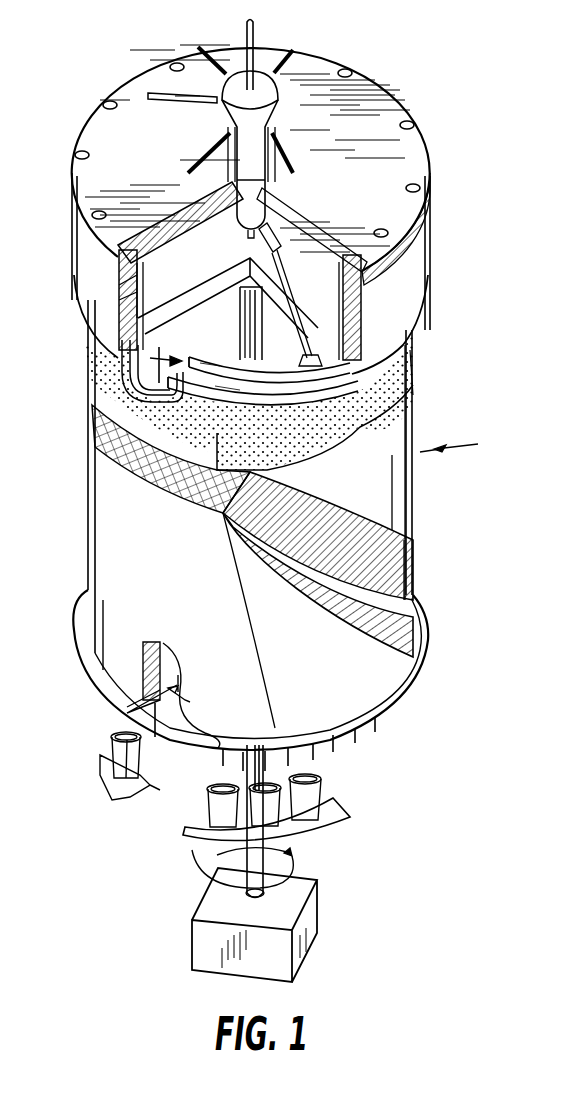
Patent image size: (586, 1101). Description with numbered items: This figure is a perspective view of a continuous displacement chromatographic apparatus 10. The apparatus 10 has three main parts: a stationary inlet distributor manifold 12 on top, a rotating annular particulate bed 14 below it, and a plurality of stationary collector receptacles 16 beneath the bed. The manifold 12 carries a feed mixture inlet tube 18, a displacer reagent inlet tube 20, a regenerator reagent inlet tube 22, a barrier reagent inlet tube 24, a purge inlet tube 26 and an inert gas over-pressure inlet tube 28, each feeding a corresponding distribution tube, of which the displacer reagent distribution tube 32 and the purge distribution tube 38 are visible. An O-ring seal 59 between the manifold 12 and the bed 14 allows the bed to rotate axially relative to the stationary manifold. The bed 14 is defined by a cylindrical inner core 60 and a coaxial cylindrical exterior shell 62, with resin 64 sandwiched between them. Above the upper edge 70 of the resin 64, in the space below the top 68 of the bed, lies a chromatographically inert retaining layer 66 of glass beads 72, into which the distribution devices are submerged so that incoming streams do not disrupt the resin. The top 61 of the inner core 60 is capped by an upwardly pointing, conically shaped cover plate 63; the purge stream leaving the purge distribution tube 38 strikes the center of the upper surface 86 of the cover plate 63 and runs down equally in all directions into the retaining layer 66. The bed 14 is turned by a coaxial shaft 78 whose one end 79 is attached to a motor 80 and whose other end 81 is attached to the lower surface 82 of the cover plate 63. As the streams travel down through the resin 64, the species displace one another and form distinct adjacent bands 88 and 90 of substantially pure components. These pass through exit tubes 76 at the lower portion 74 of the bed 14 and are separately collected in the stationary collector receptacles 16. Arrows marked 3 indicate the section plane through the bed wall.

The continuous displacement chromatographic apparatus 10 is at (461, 439).
The stationary inlet distributor manifold 12 is at (430, 240).
The rotating annular particulate bed 14 is at (413, 497).
The stationary collector receptacles 16 is at (100, 762).
The feed mixture inlet tube 18 is at (165, 100).
The displacer reagent inlet tube 20 is at (296, 165).
The regenerator reagent inlet tube 22 is at (288, 55).
The barrier reagent inlet tube 24 is at (206, 52).
The purge inlet tube 26 is at (254, 50).
The inert gas over-pressure inlet tube 28 is at (198, 150).
The displacer reagent distribution tube 32 is at (300, 266).
The purge distribution tube 38 is at (248, 240).
The O-ring seal 59 is at (380, 362).
The cylindrical inner core 60 is at (175, 332).
The top of the inner core 61 is at (172, 307).
The cylindrical exterior shell 62 is at (96, 432).
The inner wall section 63 is at (119, 285).
The resin 64 is at (100, 492).
The chromatographically inert retaining layer 66 is at (90, 367).
The top of the rotating annular particulate bed 68 is at (119, 315).
The upper edge of the resin 70 is at (414, 397).
The glass beads 72 is at (414, 385).
The lower portion of the particulate bed 74 is at (138, 699).
The exit tubes 76 is at (150, 728).
The coaxial shaft 78 is at (212, 849).
The shaft end attached to motor 79 is at (215, 898).
The motor 80 is at (210, 942).
The shaft end attached to cover plate 81 is at (258, 298).
The lower surface of the cover plate 82 is at (258, 360).
The upper surface of the cover plate 86 is at (360, 287).
The band containing substantially pure species B 88 is at (332, 630).
The band containing substantially pure species C 90 is at (412, 559).
The section line 3 is at (172, 534).